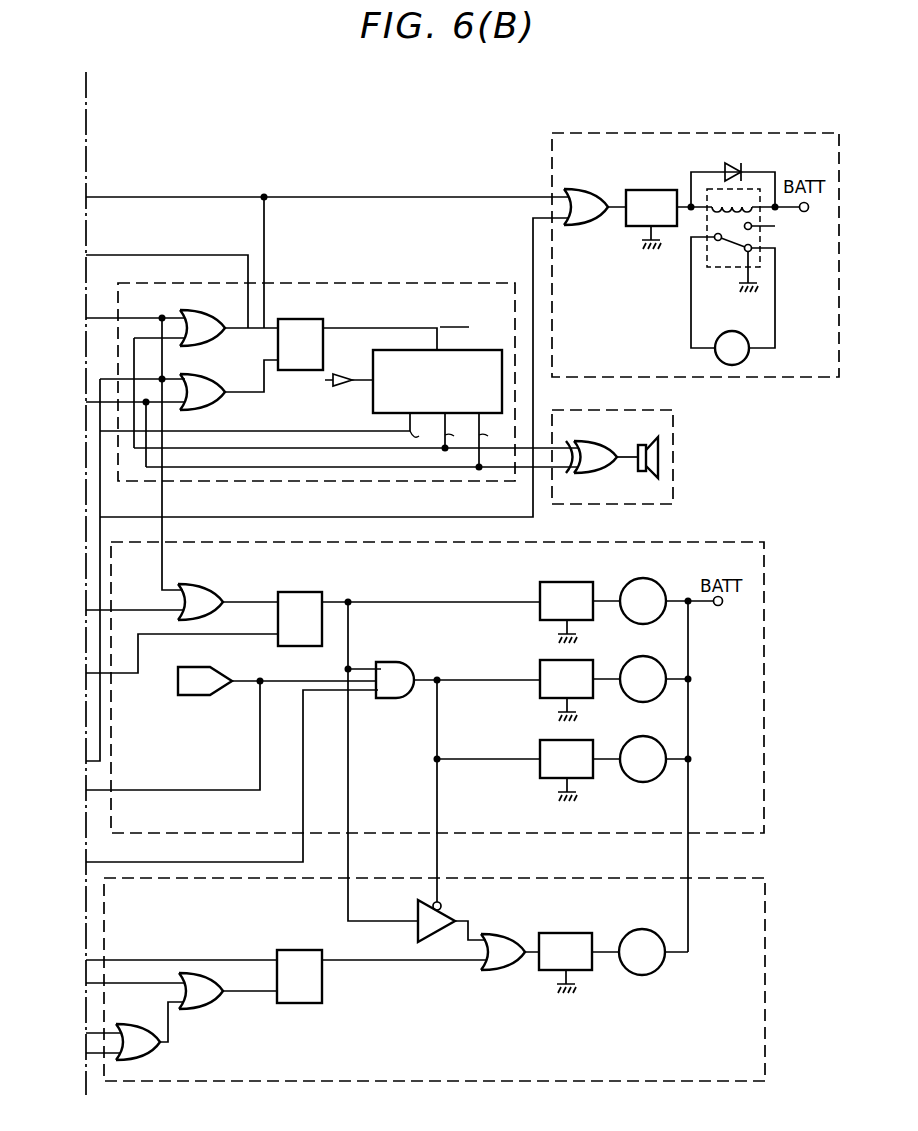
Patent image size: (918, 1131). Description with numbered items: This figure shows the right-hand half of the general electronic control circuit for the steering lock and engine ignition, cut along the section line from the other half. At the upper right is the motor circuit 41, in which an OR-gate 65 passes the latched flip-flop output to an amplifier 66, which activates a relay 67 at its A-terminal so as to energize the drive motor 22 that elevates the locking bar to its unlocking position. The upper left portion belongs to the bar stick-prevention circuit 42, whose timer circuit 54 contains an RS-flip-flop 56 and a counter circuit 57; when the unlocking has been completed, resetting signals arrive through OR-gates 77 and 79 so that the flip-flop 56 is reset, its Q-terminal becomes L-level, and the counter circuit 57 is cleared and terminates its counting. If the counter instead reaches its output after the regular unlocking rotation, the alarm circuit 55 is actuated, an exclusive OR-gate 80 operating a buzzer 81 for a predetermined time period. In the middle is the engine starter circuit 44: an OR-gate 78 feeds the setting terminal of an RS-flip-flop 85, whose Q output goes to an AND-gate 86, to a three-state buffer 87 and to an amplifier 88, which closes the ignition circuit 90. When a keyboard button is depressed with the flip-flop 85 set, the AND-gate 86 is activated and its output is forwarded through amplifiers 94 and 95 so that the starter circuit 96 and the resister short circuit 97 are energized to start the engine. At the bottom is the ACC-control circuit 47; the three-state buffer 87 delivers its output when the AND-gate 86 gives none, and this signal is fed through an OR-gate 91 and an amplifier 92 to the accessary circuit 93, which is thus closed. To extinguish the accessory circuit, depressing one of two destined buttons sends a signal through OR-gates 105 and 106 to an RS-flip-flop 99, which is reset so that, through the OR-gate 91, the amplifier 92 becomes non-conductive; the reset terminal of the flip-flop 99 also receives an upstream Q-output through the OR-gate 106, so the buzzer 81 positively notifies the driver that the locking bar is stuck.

The bar stick-prevention circuit 42 is at (232, 162).
The motor circuit 41 is at (820, 133).
The OR-gate 65 is at (587, 190).
The amplifier 66 is at (652, 190).
The relay 67 is at (758, 240).
The drive motor 22 is at (728, 331).
The timer circuit 54 is at (505, 283).
The RS-flip-flop 56 is at (300, 319).
The counter circuit 57 is at (496, 350).
The OR-gate 77 is at (198, 312).
The OR-gate 79 is at (198, 376).
The exclusive OR-gate 80 is at (586, 441).
The buzzer 81 is at (644, 445).
The alarm circuit 55 is at (675, 444).
The engine starter circuit 44 is at (768, 572).
The OR-gate 78 is at (198, 585).
The RS-flip-flop 85 is at (301, 592).
The AND-gate 86 is at (394, 666).
The amplifier 94 is at (196, 670).
The amplifier 88 is at (593, 584).
The ignition circuit 90 is at (662, 584).
The starter circuit 96 is at (662, 662).
The amplifier 95 is at (593, 742).
The resister short circuit 97 is at (662, 742).
The ACC-control circuit 47 is at (767, 908).
The three-state buffer 87 is at (418, 908).
The OR-gate 91 is at (500, 934).
The amplifier 92 is at (571, 933).
The accessary circuit 93 is at (648, 930).
The RS-flip-flop 99 is at (308, 1003).
The OR-gate 106 is at (208, 1008).
The OR-gate 105 is at (155, 1057).